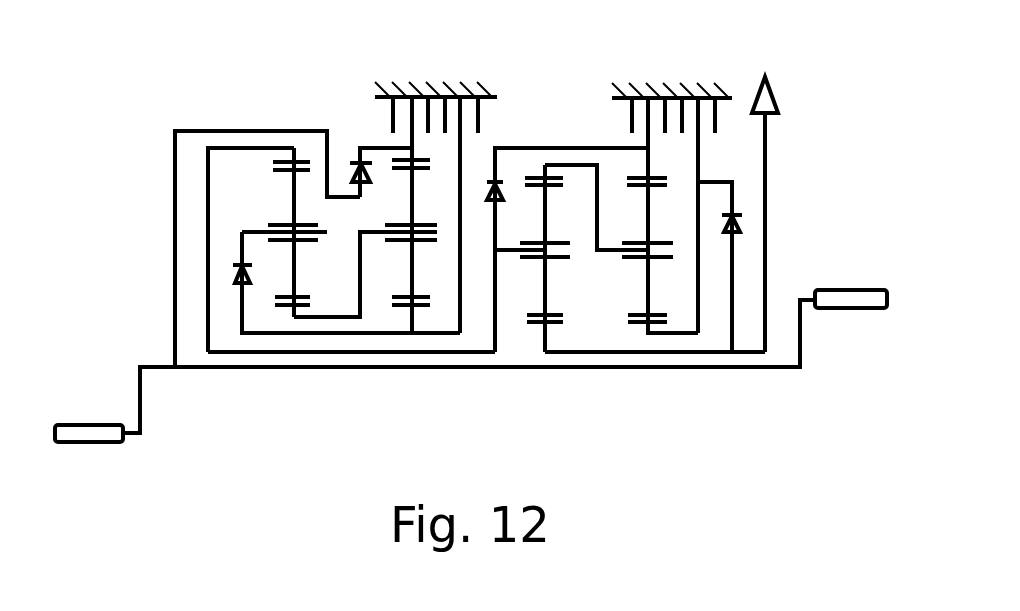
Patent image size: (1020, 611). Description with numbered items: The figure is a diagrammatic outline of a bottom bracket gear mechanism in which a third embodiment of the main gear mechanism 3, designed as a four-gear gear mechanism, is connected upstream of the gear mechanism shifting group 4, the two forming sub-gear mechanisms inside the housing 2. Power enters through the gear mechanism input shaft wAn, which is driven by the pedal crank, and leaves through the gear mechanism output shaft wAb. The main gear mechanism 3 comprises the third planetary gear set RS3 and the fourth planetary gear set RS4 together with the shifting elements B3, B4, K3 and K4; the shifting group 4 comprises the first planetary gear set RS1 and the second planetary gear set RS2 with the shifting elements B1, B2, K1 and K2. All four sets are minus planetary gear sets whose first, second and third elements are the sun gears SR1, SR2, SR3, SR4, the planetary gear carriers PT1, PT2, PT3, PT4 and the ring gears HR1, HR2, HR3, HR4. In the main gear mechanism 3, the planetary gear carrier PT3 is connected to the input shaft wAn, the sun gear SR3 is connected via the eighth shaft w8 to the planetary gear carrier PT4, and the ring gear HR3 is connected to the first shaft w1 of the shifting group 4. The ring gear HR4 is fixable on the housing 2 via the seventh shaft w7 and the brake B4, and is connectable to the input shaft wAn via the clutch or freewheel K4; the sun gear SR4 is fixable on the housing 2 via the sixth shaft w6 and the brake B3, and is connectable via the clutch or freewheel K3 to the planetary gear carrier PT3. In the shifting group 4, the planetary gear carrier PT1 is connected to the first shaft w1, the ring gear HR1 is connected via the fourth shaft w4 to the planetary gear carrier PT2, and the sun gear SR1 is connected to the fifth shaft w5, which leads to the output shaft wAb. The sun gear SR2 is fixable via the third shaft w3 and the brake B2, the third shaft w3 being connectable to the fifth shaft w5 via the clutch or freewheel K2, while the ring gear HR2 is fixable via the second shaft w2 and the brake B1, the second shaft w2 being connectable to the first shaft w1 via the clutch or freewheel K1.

The housing 2 is at (713, 94).
The main gear mechanism 3 is at (343, 196).
The gear mechanism shifting group 4 is at (613, 186).
The ring gear of the first planetary gear set HR1 is at (538, 176).
The ring gear of the second planetary gear set HR2 is at (636, 178).
The ring gear of the third planetary gear set HR3 is at (283, 160).
The ring gear of the fourth planetary gear set HR4 is at (396, 160).
The sun gear of the first planetary gear set SR1 is at (535, 324).
The sun gear of the second planetary gear set SR2 is at (637, 324).
The sun gear of the third planetary gear set SR3 is at (282, 307).
The sun gear of the fourth planetary gear set SR4 is at (398, 307).
The planetary gear carrier of the first planetary gear set PT1 is at (507, 253).
The planetary gear carrier of the second planetary gear set PT2 is at (615, 253).
The planetary gear carrier of the third planetary gear set PT3 is at (262, 230).
The planetary gear carrier of the fourth planetary gear set PT4 is at (380, 238).
The first planetary gear set RS1 is at (550, 357).
The second planetary gear set RS2 is at (652, 357).
The third planetary gear set RS3 is at (299, 348).
The fourth planetary gear set RS4 is at (416, 348).
The first shifting element B1 is at (672, 92).
The second shifting element B2 is at (698, 92).
The third shifting element B3 is at (462, 92).
The fourth shifting element B4 is at (436, 92).
The fifth shifting element K1 is at (567, 250).
The sixth shifting element K2 is at (726, 251).
The seventh shifting element K3 is at (261, 276).
The eighth shifting element K4 is at (381, 178).
The gear mechanism input shaft wAn is at (267, 239).
The gear mechanism output shaft wAb is at (783, 214).
The first shaft w1 is at (351, 250).
The second shaft w2 is at (602, 144).
The third shaft w3 is at (677, 299).
The fourth shaft w4 is at (596, 207).
The fifth shaft w5 is at (587, 339).
The sixth shaft w6 is at (432, 319).
The seventh shaft w7 is at (362, 142).
The eighth shaft w8 is at (332, 304).